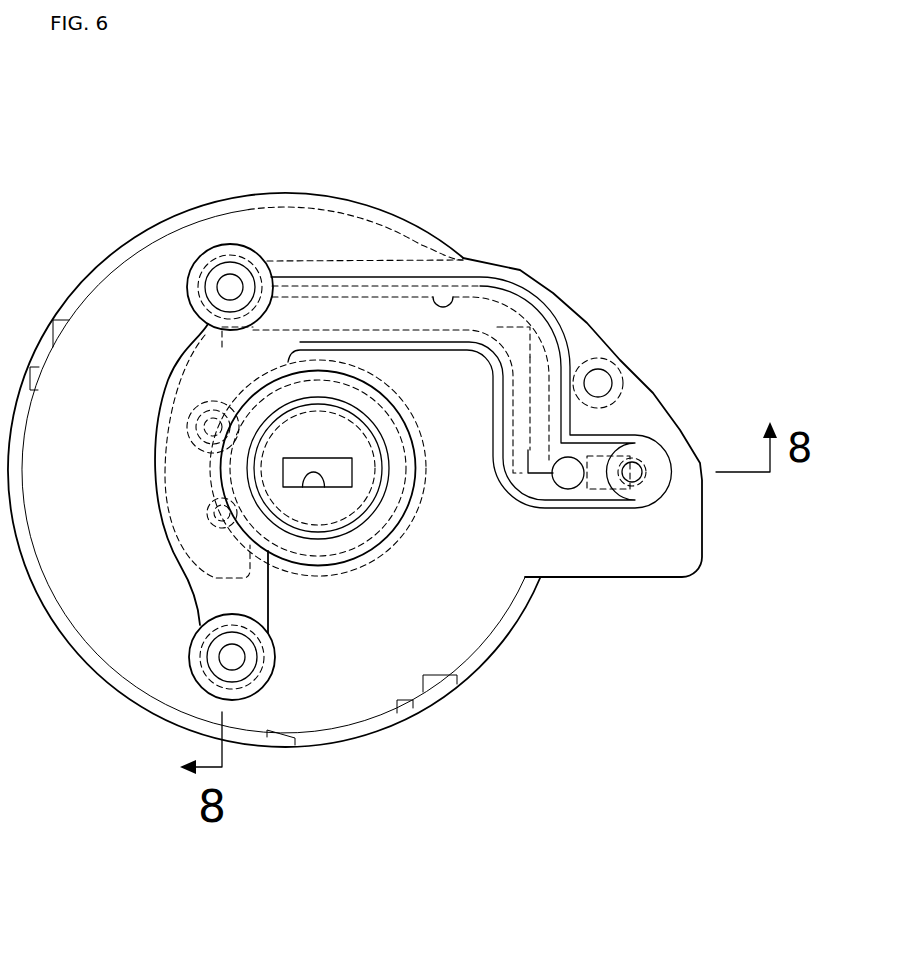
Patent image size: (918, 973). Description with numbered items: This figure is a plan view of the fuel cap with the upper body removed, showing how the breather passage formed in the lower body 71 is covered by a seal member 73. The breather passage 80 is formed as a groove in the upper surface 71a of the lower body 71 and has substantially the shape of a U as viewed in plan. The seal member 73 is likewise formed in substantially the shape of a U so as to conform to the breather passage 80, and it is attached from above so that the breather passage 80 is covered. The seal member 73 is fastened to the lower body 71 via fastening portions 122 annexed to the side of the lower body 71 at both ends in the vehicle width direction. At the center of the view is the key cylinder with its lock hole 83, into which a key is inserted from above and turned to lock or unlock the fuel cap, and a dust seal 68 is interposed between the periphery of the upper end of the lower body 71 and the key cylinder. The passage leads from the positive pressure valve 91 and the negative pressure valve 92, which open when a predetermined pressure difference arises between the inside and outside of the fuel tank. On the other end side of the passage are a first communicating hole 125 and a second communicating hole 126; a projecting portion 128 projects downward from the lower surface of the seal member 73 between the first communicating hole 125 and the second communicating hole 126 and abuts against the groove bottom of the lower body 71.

The dust seal 68 is at (380, 527).
The lower body 71 is at (295, 192).
The upper surface of the lower body 71a is at (352, 238).
The seal member 73 is at (513, 283).
The breather passage 80 is at (440, 290).
The lock hole 83 is at (313, 490).
The positive pressure valve 91 is at (213, 427).
The negative pressure valve 92 is at (222, 518).
The fastening portions 122 is at (230, 287).
The first communicating hole 125 is at (572, 456).
The second communicating hole 126 is at (637, 465).
The projecting portion 128 is at (592, 491).